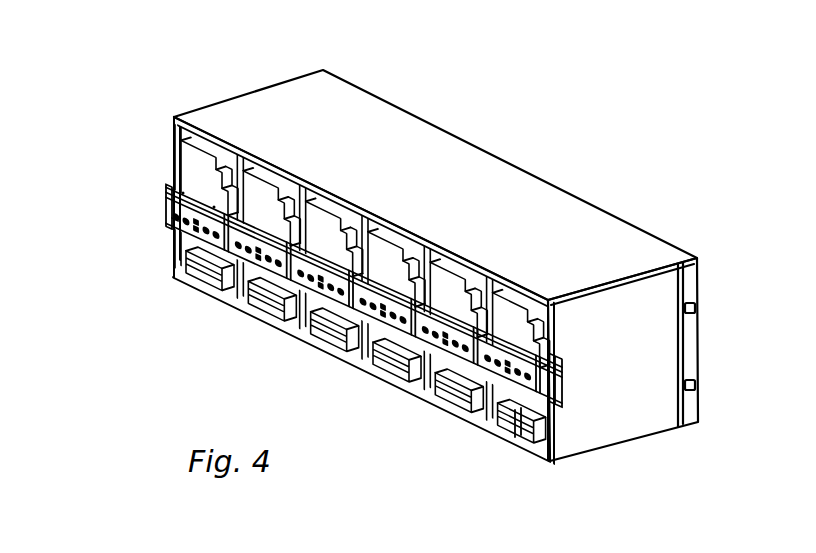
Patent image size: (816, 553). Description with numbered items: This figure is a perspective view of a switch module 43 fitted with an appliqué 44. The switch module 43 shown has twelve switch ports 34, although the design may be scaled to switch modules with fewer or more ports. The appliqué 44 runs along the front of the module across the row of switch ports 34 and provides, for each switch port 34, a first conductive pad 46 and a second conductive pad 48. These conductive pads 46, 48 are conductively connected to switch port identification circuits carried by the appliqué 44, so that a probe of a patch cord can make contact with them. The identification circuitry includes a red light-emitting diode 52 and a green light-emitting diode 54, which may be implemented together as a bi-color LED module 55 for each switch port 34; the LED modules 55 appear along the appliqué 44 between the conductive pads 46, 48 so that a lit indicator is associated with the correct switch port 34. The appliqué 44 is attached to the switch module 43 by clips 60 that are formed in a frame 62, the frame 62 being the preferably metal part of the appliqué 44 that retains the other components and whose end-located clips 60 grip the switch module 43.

The switch module 43 is at (215, 52).
The switch port 34 is at (190, 284).
The appliqué 44 is at (148, 195).
The first conductive pad 46 is at (167, 211).
The second conductive pad 48 is at (173, 222).
The light-emitting diode 52 is at (214, 206).
The light-emitting diode 54 is at (182, 190).
The LED module 55 is at (257, 252).
The clip 60 is at (563, 388).
The frame 62 is at (516, 420).